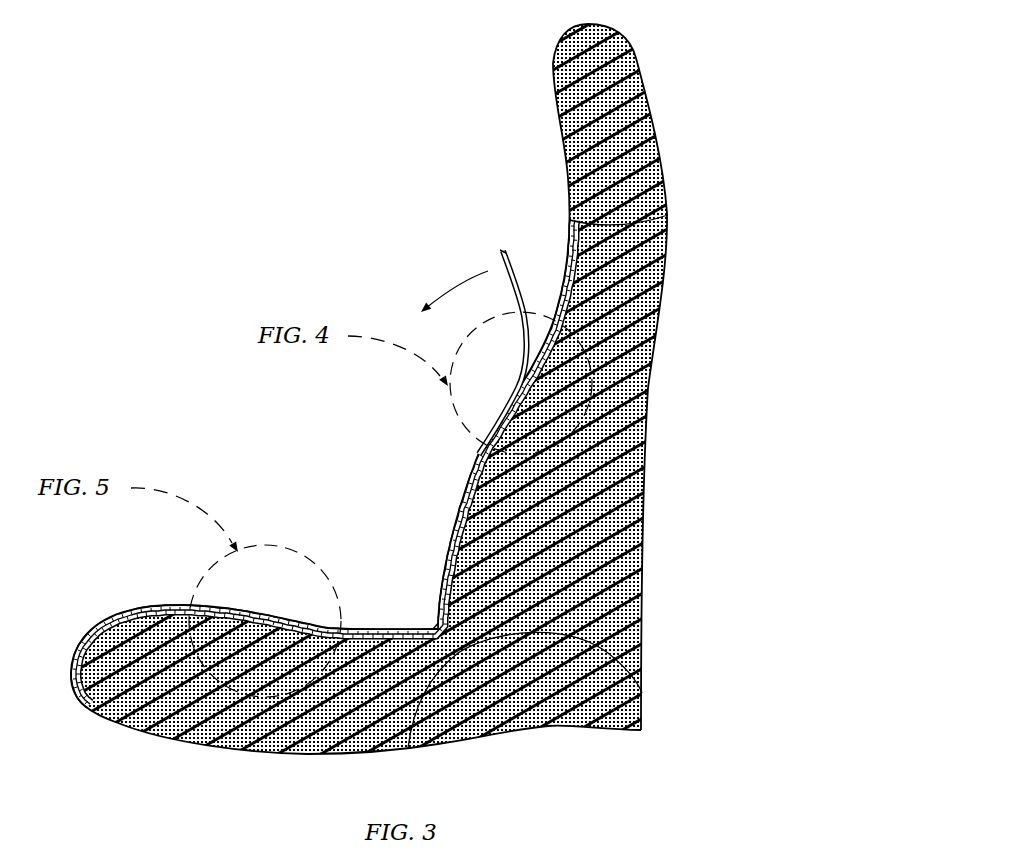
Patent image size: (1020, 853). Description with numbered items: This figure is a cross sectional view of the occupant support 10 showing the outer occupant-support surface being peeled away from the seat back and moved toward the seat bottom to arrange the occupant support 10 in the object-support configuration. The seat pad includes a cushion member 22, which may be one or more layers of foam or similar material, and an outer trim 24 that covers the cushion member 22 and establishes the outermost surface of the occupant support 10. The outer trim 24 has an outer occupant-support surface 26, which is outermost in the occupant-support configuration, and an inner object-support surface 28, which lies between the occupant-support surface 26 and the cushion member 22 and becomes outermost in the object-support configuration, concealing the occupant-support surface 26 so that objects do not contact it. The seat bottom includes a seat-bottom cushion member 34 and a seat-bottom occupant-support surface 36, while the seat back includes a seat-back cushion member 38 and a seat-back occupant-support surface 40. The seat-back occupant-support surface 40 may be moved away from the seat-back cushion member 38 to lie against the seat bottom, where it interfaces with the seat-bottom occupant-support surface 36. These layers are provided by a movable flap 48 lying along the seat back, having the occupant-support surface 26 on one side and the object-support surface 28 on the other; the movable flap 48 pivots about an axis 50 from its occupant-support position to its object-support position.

The occupant support 10 is at (659, 68).
The cushion member 22 is at (630, 336).
The outer trim 24 is at (58, 647).
The outer occupant-support surface 26 is at (407, 617).
The inner object-support surface 28 is at (557, 263).
The seat-bottom cushion member 34 is at (545, 717).
The seat-bottom occupant-support surface 36 is at (336, 617).
The seat-back cushion member 38 is at (610, 467).
The seat-back occupant-support surface 40 is at (452, 490).
The movable flap 48 is at (481, 239).
The axis 50 is at (400, 740).